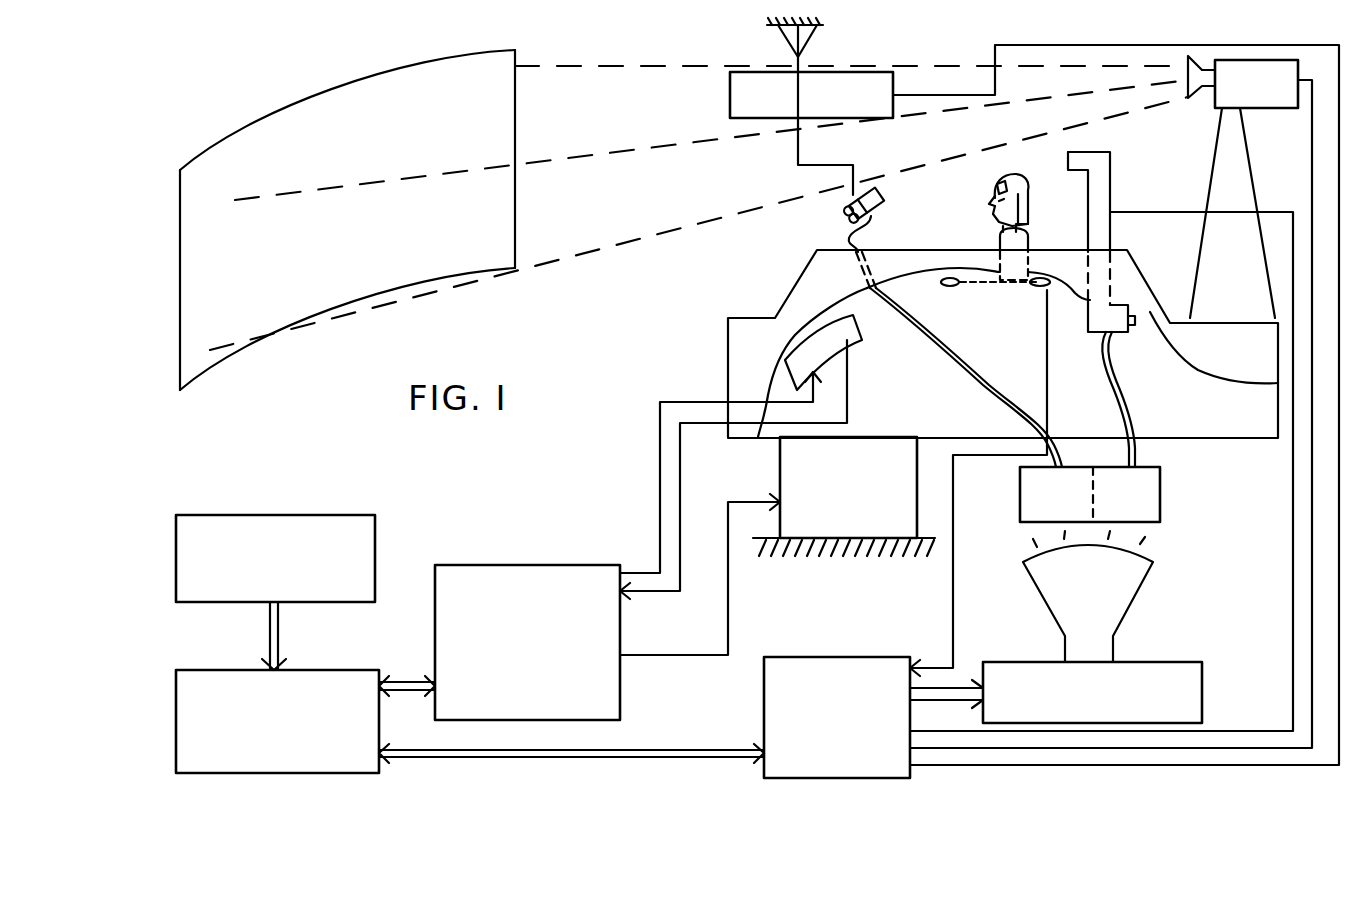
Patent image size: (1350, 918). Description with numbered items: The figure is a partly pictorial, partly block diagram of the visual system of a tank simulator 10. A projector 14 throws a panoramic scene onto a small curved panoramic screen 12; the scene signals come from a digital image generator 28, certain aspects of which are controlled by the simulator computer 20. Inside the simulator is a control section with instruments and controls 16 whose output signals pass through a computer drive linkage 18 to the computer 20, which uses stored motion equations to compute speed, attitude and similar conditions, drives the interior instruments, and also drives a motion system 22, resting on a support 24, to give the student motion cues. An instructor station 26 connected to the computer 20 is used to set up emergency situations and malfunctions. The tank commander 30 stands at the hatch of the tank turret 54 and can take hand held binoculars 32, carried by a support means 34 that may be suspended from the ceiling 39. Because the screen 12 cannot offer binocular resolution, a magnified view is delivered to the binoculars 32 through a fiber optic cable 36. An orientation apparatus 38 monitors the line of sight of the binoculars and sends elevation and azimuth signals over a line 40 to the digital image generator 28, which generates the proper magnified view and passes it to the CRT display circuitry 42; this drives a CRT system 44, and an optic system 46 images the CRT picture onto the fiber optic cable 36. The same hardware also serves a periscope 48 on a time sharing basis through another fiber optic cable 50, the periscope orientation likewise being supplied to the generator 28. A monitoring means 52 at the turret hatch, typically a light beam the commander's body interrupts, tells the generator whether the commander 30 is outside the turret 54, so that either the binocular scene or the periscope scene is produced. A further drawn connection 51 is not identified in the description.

The tank simulator 10 is at (969, 344).
The panoramic screen 12 is at (214, 346).
The projector 14 is at (1272, 110).
The instruments and controls 16 is at (855, 336).
The computer drive linkage 18 is at (527, 642).
The computer 20 is at (277, 721).
The motion system 22 is at (780, 467).
The support 24 is at (842, 546).
The instructor station 26 is at (275, 558).
The digital image generator 28 is at (837, 717).
The tank commander 30 is at (1023, 187).
The hand held binoculars 32 is at (882, 212).
The support means 34 is at (798, 157).
The fiber optic cable 36 is at (976, 380).
The orientation apparatus 38 is at (730, 97).
The ceiling 39 is at (812, 32).
The line 40 is at (1339, 530).
The CRT display circuitry 42 is at (1202, 693).
The CRT system 44 is at (1120, 606).
The optic system 46 is at (1160, 498).
The periscope 48 is at (1112, 180).
The fiber optic cable 50 is at (1130, 405).
The signal line 51 is at (1293, 468).
The monitoring means 52 is at (1072, 275).
The tank turret 54 is at (795, 283).